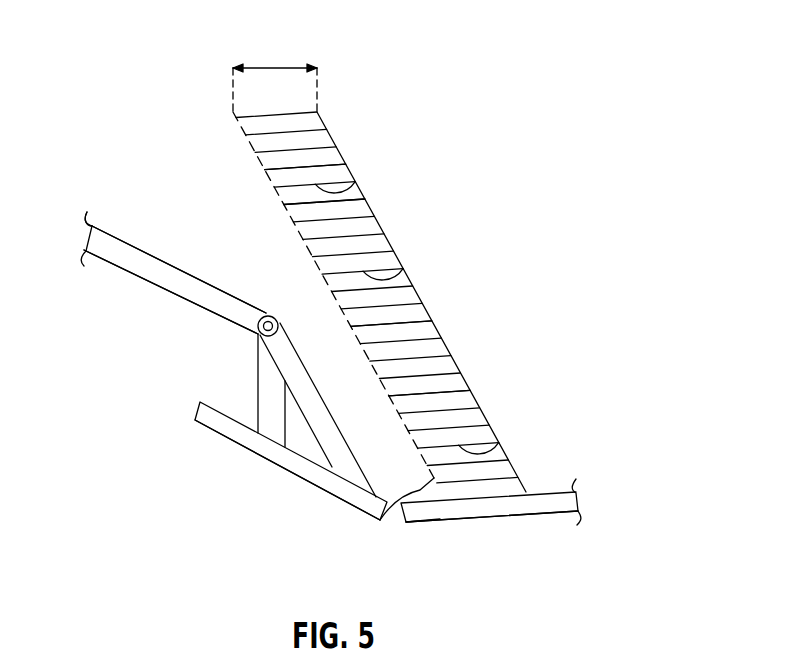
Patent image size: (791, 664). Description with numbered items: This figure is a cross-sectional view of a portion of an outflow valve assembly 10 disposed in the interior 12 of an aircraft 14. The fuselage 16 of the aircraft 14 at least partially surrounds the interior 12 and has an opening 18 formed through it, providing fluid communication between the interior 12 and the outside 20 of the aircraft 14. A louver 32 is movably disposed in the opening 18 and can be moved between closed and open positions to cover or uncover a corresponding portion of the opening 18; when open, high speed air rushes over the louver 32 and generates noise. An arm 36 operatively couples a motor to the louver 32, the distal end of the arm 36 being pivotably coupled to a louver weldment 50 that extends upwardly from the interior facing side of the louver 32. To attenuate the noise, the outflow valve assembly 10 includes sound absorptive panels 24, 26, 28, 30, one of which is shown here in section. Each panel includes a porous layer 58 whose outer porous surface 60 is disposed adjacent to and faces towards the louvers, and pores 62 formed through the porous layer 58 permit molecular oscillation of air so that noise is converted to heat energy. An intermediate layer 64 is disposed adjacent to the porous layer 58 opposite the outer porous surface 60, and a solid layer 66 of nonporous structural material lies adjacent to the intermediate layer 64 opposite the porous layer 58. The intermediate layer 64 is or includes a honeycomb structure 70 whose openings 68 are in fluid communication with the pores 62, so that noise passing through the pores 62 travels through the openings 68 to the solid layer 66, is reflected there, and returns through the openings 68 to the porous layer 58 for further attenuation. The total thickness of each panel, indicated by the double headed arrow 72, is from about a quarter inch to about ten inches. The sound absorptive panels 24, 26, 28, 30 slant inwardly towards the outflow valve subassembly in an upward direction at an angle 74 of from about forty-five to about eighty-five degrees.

The outflow valve assembly 10 is at (104, 145).
The interior 12 is at (168, 108).
The aircraft 14 is at (578, 522).
The fuselage 16 is at (495, 520).
The opening 18 is at (287, 528).
The outside 20 is at (470, 595).
The sound absorptive panel 24 is at (372, 246).
The sound absorptive panel 26 is at (372, 246).
The sound absorptive panel 28 is at (372, 246).
The sound absorptive panel 30 is at (317, 112).
The louver 32 is at (208, 428).
The arm 36 is at (172, 280).
The louver weldment 50 is at (257, 382).
The porous layer 58 is at (291, 221).
The outer porous surface 60 is at (250, 150).
The pores 62 is at (336, 316).
The intermediate layer 64 is at (280, 198).
The solid layer 66 is at (455, 362).
The openings 68 is at (318, 142).
The honeycomb structure 70 is at (347, 182).
The total thickness 72 is at (276, 66).
The angle 74 is at (380, 520).